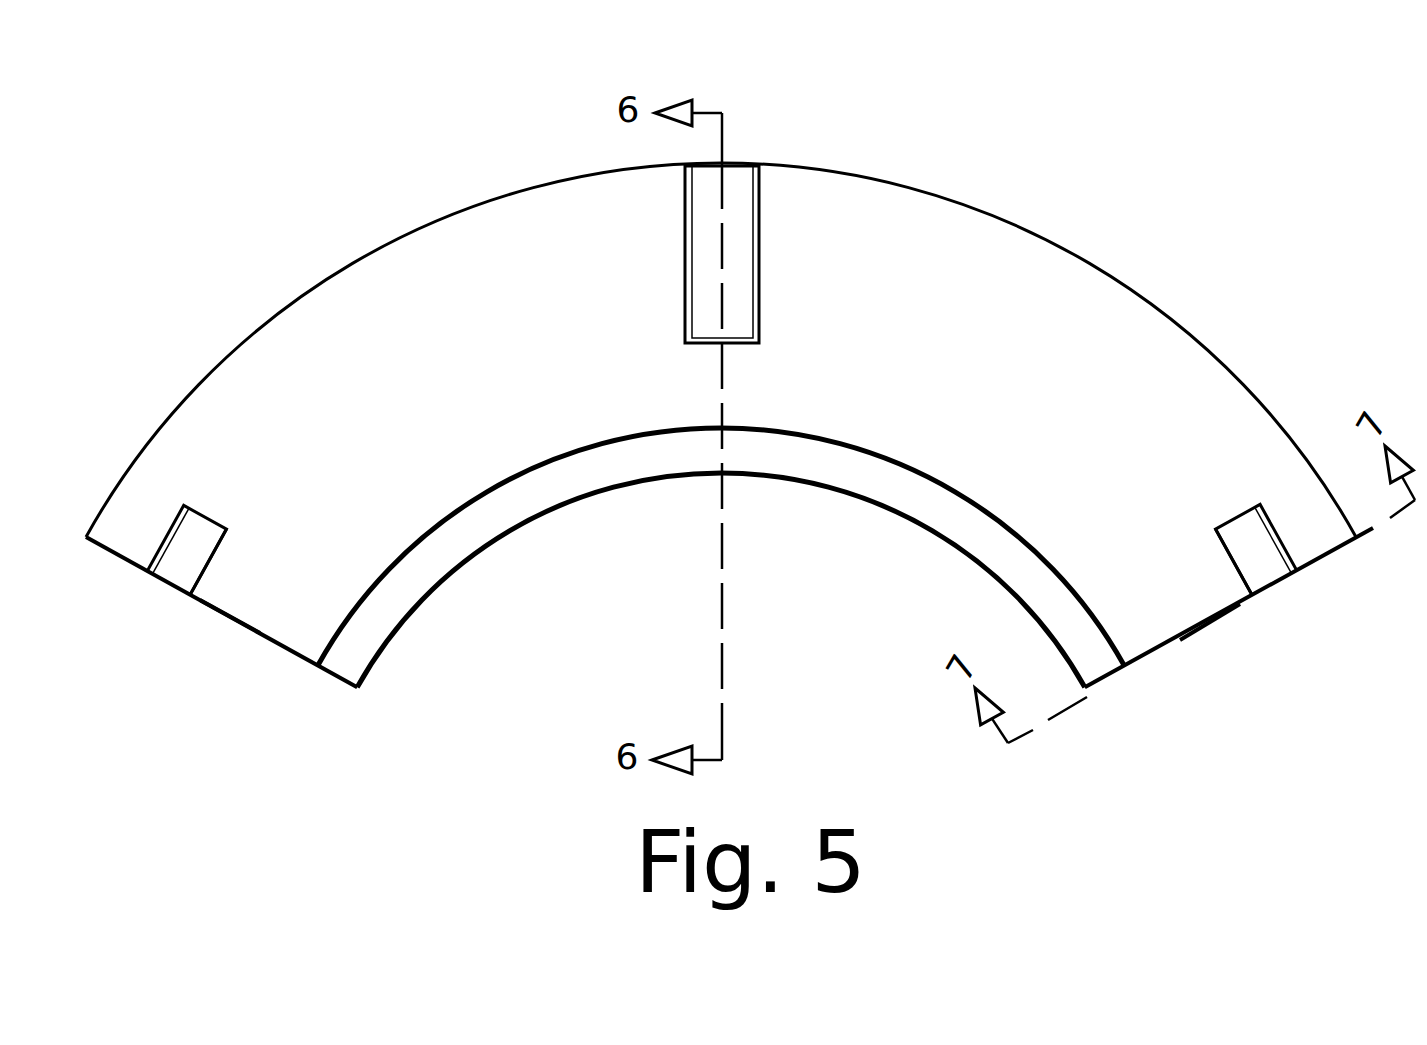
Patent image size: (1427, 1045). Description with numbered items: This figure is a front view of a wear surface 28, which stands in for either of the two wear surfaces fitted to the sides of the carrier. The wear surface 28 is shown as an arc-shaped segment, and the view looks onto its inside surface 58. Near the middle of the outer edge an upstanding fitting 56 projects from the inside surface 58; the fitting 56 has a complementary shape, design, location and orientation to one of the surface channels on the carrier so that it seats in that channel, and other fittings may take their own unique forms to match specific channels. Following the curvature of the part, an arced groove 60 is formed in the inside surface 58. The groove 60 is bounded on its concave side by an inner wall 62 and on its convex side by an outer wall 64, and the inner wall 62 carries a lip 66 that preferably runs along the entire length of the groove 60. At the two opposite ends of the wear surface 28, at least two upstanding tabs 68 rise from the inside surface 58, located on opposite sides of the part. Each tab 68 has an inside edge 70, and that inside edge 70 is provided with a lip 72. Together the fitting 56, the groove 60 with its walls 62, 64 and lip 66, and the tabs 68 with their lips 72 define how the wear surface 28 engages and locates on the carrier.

The wear surface 28 is at (1053, 185).
The upstanding fitting 56 is at (735, 249).
The inside surface 58 is at (347, 305).
The arced groove 60 is at (721, 548).
The inner wall 62 is at (885, 505).
The outer wall 64 is at (868, 453).
The lip 66 is at (1010, 580).
The upstanding tab 68 is at (206, 530).
The inside edge 70 is at (220, 593).
The lip 72 is at (216, 545).